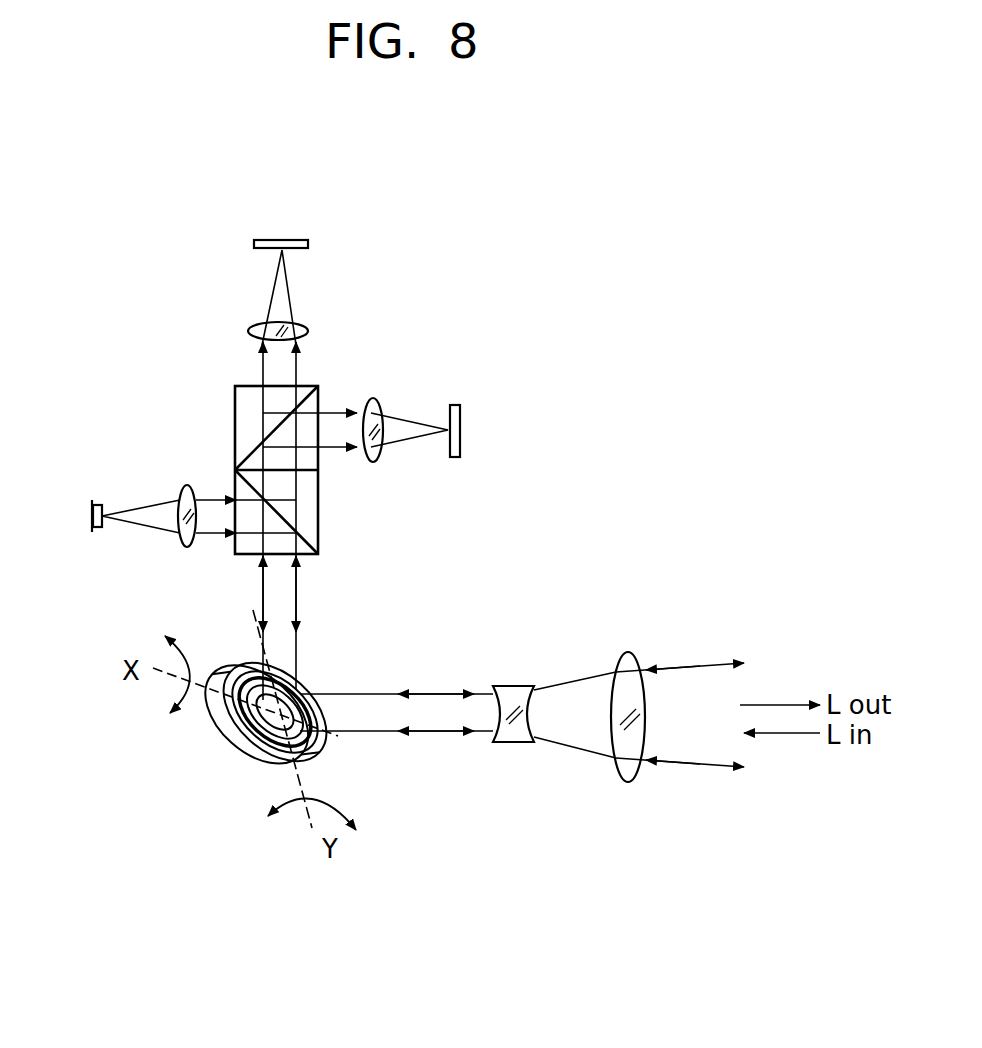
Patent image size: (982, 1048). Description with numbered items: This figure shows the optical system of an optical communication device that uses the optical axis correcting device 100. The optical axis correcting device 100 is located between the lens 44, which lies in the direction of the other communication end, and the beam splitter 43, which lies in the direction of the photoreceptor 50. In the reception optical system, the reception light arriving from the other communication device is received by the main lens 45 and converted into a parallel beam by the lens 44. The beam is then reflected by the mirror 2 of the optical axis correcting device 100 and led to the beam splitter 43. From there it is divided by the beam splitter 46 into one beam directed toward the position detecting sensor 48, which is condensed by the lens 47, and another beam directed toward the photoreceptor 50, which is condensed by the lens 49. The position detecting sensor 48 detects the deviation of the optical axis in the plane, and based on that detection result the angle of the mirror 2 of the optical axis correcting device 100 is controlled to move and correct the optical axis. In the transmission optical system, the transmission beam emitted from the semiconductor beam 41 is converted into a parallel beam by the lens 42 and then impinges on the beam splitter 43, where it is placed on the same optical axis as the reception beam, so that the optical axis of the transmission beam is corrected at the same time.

The mirror 2 is at (258, 728).
The semiconductor beam 41 is at (90, 505).
The lens 42 is at (181, 495).
The beam splitter 43 is at (320, 524).
The lens 44 is at (517, 684).
The main lens 45 is at (638, 670).
The beam splitter 46 is at (235, 413).
The lens 47 is at (383, 400).
The position detecting sensor 48 is at (461, 430).
The lens 49 is at (256, 326).
The photoreceptor 50 is at (288, 240).
The optical axis correcting device 100 is at (204, 803).